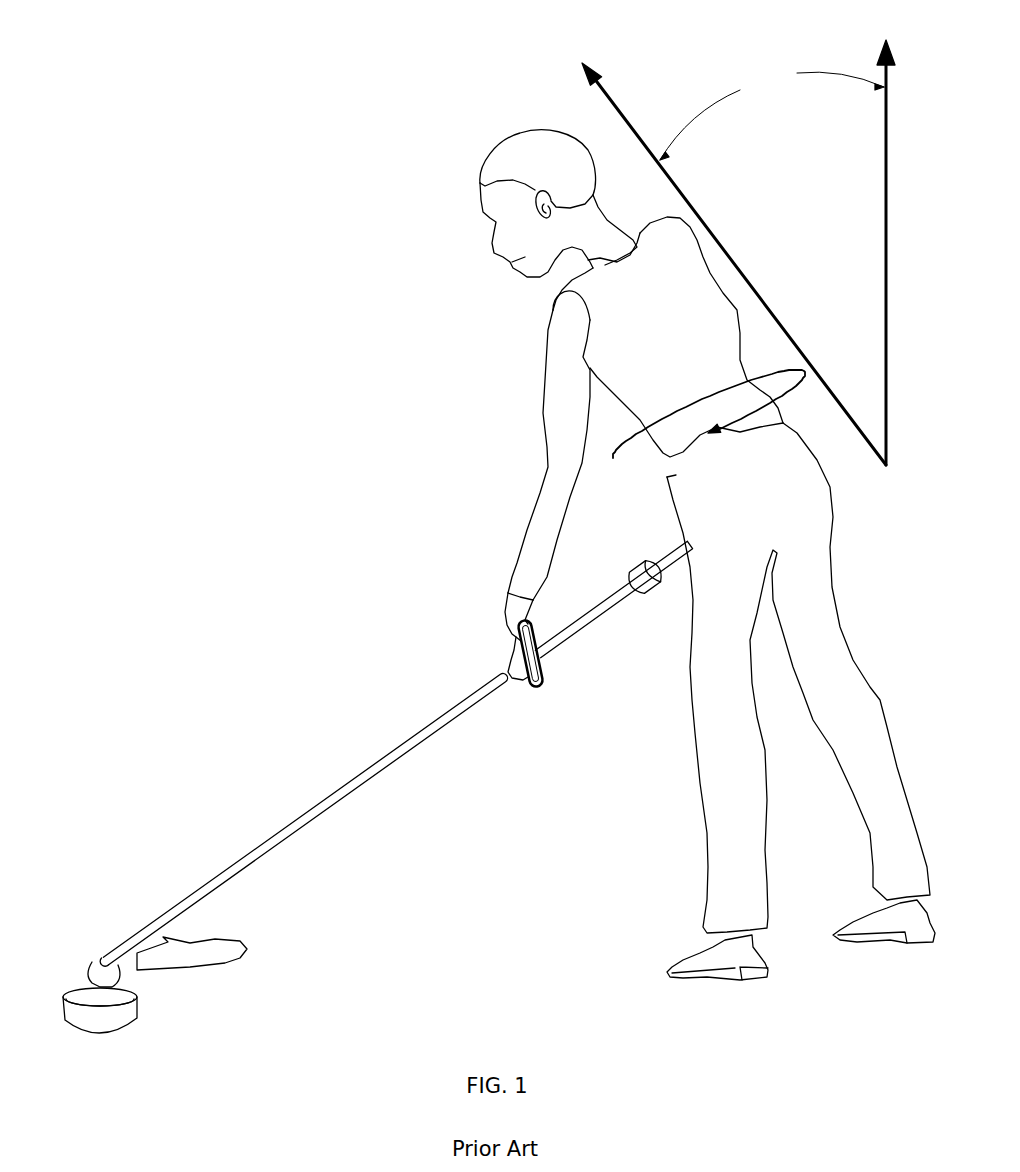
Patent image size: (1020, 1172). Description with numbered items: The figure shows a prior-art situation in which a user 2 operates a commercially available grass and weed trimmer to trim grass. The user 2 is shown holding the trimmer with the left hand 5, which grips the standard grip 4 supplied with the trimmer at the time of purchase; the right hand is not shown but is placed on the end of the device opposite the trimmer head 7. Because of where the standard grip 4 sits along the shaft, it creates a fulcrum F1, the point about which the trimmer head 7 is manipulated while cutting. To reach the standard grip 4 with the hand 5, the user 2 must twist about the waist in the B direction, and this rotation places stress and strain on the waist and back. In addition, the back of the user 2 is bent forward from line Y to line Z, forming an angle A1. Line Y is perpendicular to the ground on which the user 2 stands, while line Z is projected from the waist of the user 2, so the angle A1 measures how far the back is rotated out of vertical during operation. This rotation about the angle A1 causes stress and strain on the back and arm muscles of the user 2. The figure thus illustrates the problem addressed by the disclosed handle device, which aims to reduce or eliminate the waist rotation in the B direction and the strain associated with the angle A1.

The user 2 is at (707, 555).
The standard grip 4 is at (503, 655).
The hand 5 is at (503, 606).
The trimmer head 7 is at (152, 986).
The fulcrum F1 is at (541, 675).
The B direction B is at (707, 431).
The angle A1 is at (772, 113).
The line Y is at (885, 239).
The line Z is at (727, 253).